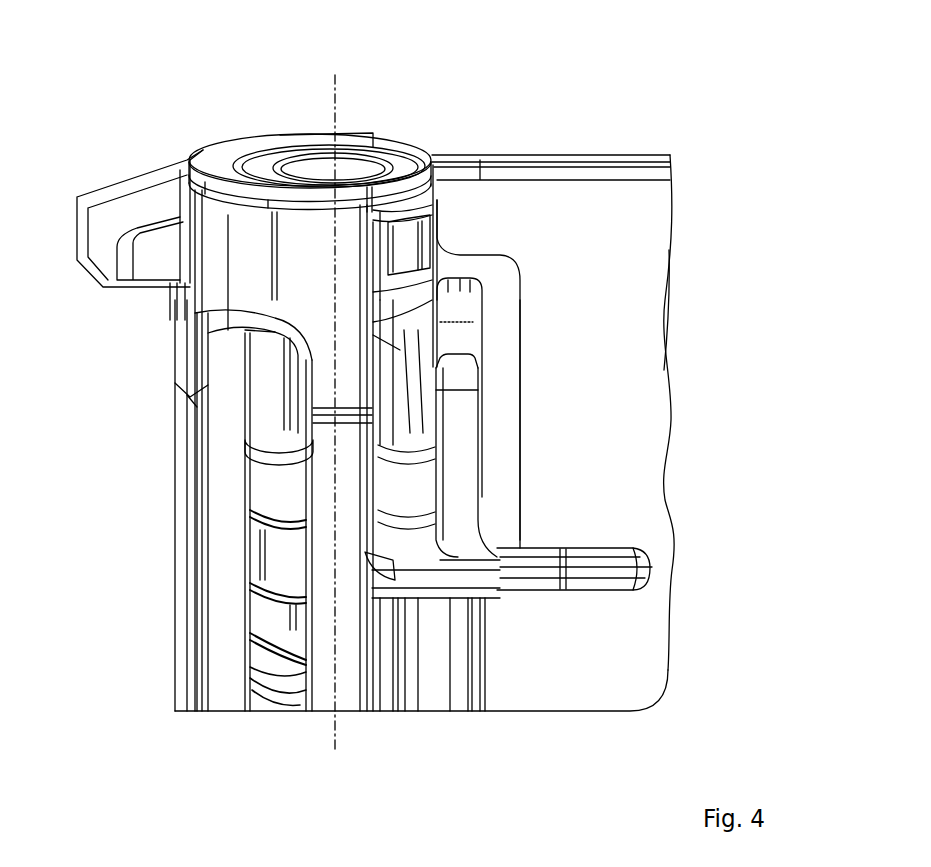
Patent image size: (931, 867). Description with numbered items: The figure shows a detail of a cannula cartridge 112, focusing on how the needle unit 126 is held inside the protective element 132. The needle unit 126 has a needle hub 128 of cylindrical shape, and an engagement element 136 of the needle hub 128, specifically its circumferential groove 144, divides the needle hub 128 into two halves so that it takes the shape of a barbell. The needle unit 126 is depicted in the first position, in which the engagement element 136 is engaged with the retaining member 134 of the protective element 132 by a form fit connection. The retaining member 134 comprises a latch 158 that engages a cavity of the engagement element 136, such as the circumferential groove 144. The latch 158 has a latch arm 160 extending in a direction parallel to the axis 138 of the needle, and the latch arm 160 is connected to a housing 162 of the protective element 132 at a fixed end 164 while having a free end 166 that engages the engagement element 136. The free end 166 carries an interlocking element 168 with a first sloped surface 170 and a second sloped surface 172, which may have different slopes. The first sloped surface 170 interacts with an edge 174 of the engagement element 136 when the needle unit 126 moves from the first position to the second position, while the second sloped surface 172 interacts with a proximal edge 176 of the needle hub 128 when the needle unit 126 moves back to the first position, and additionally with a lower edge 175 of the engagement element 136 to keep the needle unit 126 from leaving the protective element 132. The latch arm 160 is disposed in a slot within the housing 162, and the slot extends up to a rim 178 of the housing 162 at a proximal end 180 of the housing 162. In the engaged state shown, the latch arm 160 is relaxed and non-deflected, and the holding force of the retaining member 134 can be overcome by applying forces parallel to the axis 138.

The cannula cartridge 112 is at (698, 147).
The needle unit 126 is at (233, 530).
The needle hub 128 is at (297, 506).
The protective element 132 is at (660, 395).
The retaining member 134 is at (548, 462).
The engagement element 136 is at (172, 293).
The axis 138 is at (340, 750).
The circumferential groove 144 is at (275, 407).
The latch 158 is at (485, 411).
The latch arm 160 is at (460, 456).
The housing 162 is at (650, 300).
The fixed end 164 is at (510, 561).
The free end 166 is at (483, 360).
The interlocking element 168 is at (420, 364).
The first sloped surface 170 is at (400, 305).
The second sloped surface 172 is at (468, 500).
The edge 174 is at (330, 313).
The lower edge 175 is at (338, 468).
The proximal edge 176 is at (406, 142).
The rim 178 is at (433, 140).
The proximal end 180 is at (258, 130).